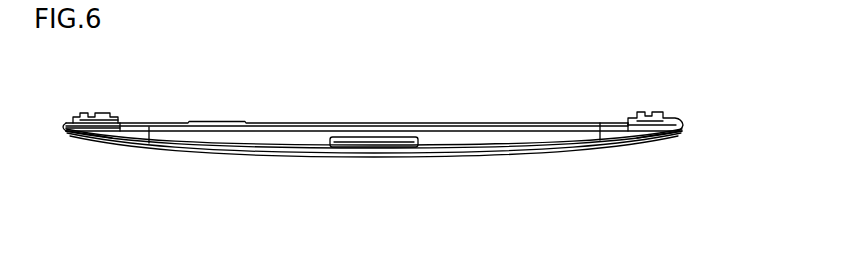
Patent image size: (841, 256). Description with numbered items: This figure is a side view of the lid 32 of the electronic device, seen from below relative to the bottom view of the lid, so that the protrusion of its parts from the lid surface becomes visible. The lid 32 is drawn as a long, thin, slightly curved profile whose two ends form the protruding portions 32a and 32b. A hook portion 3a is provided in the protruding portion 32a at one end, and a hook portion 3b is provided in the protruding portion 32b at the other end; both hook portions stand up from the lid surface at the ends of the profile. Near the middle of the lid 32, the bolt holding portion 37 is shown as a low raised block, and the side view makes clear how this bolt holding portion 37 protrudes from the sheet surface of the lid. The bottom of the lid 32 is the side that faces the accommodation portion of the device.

The lid 32 is at (684, 112).
The protruding portion 32a is at (637, 138).
The protruding portion 32b is at (112, 138).
The hook portion 3a is at (638, 118).
The hook portion 3b is at (108, 116).
The bolt holding portion 37 is at (394, 137).